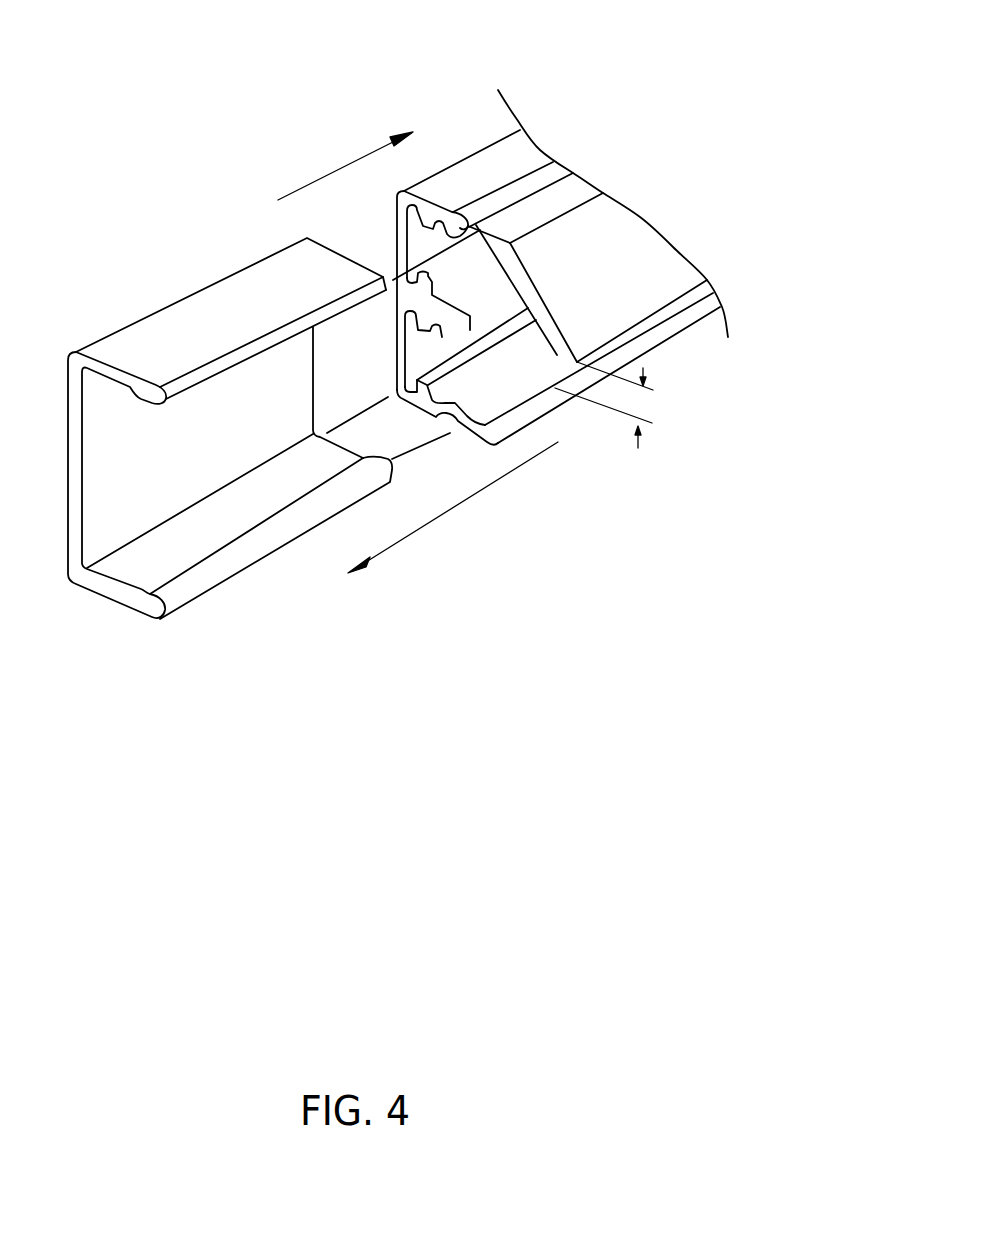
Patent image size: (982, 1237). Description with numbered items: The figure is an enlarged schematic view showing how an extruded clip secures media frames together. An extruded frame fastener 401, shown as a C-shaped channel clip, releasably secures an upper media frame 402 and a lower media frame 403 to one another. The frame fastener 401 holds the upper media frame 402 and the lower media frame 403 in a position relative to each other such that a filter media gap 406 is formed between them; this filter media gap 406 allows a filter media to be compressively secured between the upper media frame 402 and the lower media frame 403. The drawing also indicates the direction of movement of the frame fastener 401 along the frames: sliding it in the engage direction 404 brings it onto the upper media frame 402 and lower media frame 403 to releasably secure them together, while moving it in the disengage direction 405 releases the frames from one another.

The frame fastener 401 is at (218, 303).
The upper media frame 402 is at (485, 185).
The lower media frame 403 is at (557, 405).
The engage direction 404 is at (345, 166).
The disengage direction 405 is at (453, 507).
The filter media gap 406 is at (632, 405).